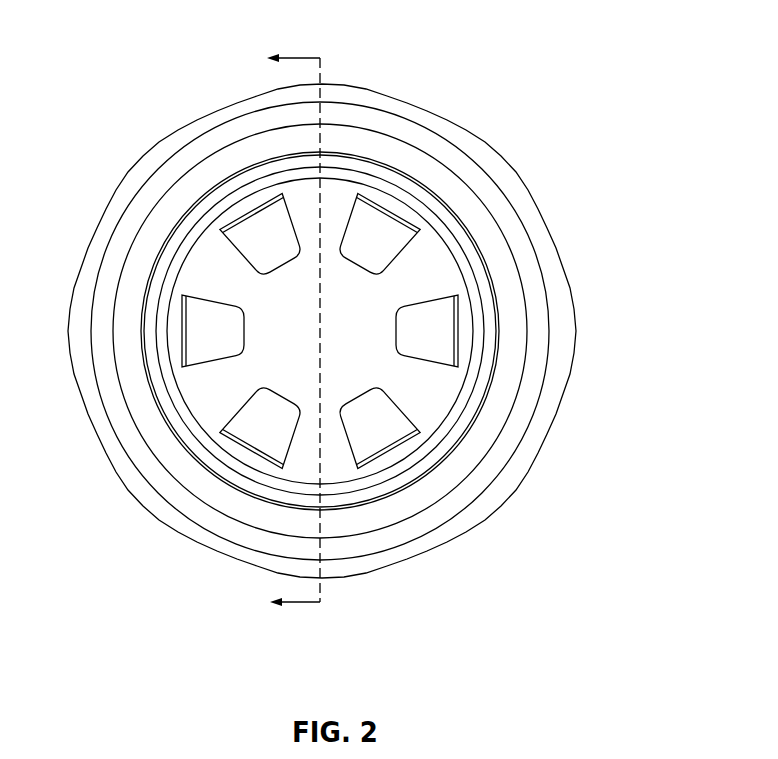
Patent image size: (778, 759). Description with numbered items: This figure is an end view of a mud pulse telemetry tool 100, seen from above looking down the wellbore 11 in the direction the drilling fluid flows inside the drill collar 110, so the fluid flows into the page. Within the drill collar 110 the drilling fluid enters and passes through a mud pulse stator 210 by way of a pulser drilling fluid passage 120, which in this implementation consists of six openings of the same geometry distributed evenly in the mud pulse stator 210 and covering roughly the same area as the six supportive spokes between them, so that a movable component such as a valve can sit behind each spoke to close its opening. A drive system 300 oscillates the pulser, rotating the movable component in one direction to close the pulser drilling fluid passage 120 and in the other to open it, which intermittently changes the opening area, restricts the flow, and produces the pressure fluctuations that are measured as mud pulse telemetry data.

The mud pulse telemetry tool 100 is at (132, 80).
The wellbore 11 is at (428, 105).
The drill collar 110 is at (462, 165).
The mud pulse stator 210 is at (445, 272).
The pulser drilling fluid passage 120 is at (440, 331).
The drive system 300 is at (400, 440).